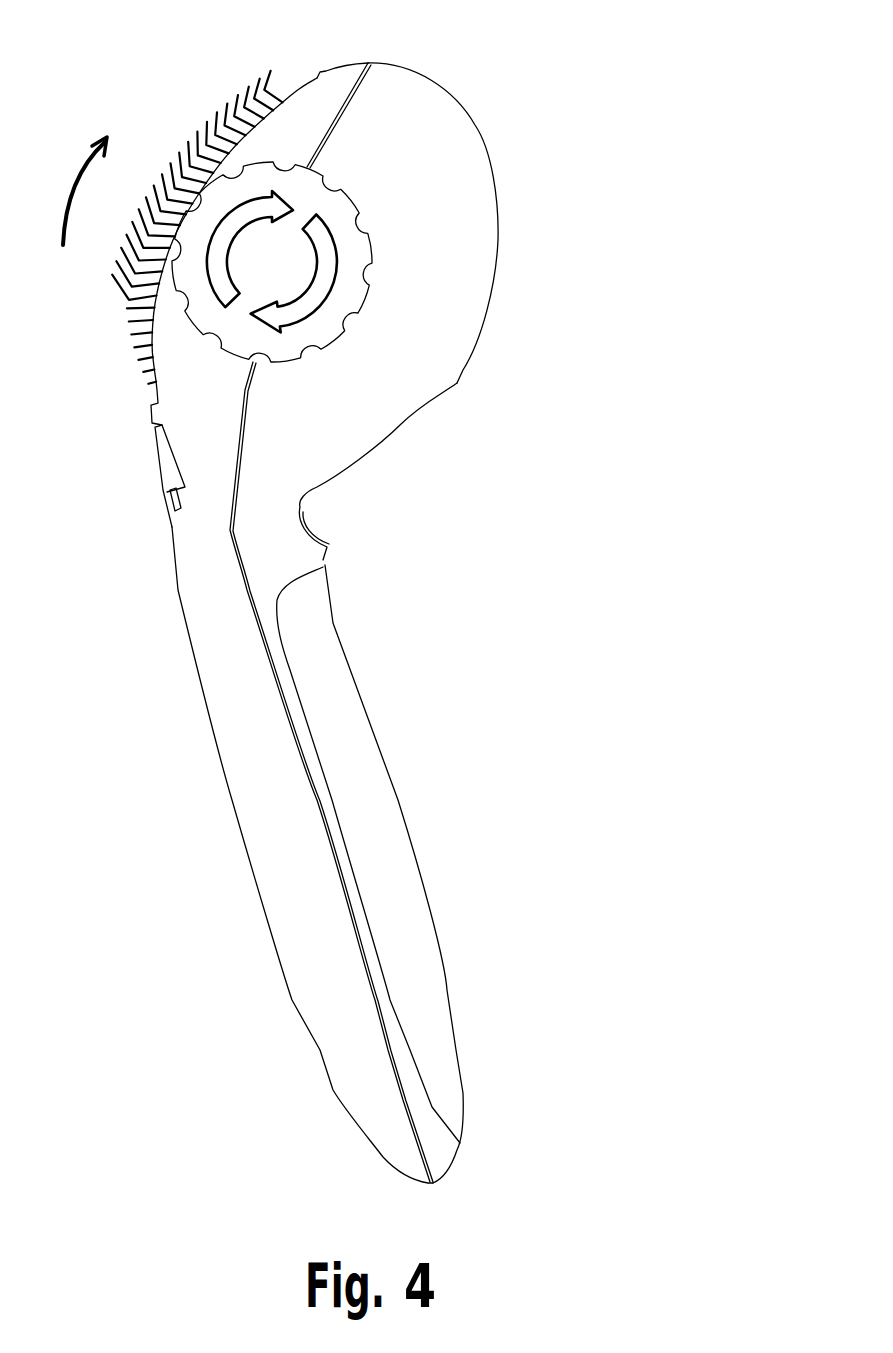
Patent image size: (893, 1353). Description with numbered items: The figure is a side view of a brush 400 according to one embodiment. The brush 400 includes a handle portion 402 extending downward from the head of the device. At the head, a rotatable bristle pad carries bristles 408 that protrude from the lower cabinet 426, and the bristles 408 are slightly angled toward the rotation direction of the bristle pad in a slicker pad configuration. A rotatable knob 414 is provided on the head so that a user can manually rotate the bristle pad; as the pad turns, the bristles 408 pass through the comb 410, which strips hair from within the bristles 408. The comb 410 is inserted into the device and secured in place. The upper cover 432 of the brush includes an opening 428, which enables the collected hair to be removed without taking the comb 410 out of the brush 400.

The hair styling device 400 is at (617, 228).
The handle 402 is at (400, 866).
The bristles 408 is at (193, 113).
The release latch 410 is at (168, 478).
The rotation knob 414 is at (352, 233).
The housing seam 426 is at (345, 78).
The neck portion 428 is at (367, 455).
The head housing 432 is at (470, 318).